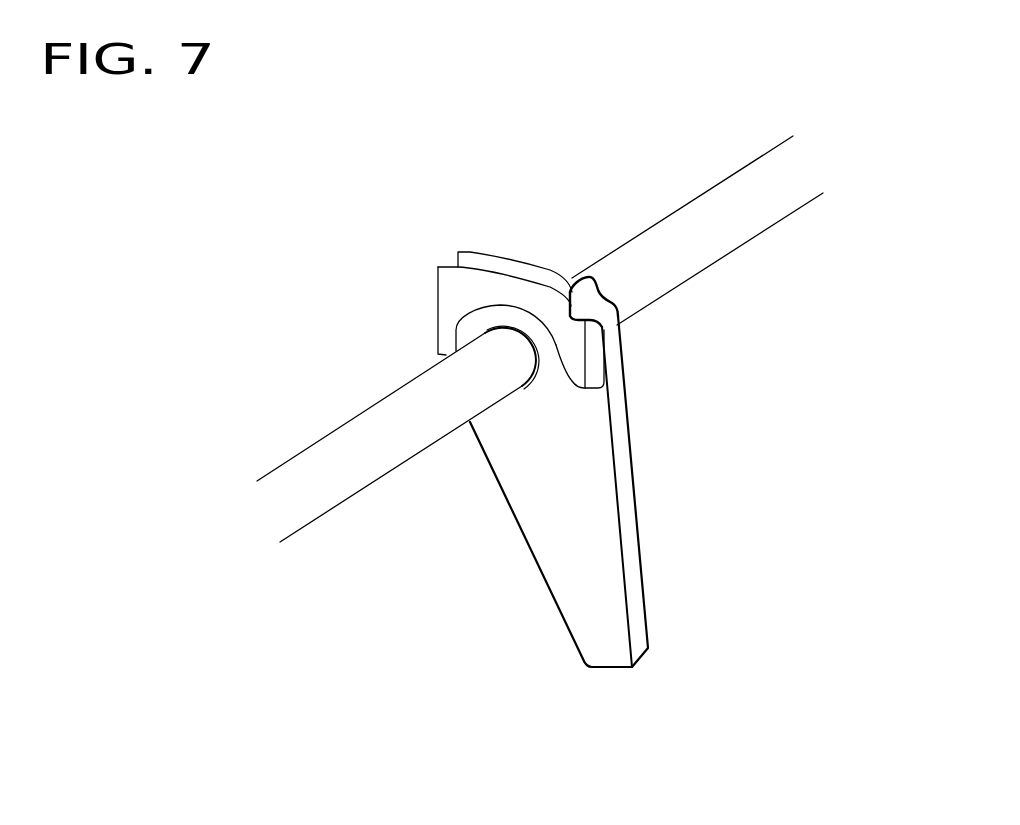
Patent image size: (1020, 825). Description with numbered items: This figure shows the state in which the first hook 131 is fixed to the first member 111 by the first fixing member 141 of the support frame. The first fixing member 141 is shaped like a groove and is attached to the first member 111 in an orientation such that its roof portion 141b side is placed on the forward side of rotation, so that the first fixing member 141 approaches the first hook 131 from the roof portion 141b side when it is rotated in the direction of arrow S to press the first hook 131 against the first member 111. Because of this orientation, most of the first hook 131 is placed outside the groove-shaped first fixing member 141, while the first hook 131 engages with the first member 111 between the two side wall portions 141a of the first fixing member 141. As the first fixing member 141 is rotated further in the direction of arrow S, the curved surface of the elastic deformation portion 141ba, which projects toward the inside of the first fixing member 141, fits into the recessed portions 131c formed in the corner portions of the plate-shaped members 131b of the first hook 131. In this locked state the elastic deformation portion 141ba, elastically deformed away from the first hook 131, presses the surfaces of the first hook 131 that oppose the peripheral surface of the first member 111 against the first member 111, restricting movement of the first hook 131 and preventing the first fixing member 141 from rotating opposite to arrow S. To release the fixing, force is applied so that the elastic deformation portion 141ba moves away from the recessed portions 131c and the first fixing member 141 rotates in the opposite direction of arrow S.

The first member 111 is at (285, 460).
The arrow S is at (390, 488).
The first hook 131 is at (458, 265).
The plate-shaped member 131b is at (482, 262).
The recessed portion 131c is at (556, 328).
The first fixing member 141 is at (598, 483).
The side wall portion 141a is at (557, 542).
The roof portion 141b is at (681, 472).
The elastic deformation portion 141ba is at (592, 303).